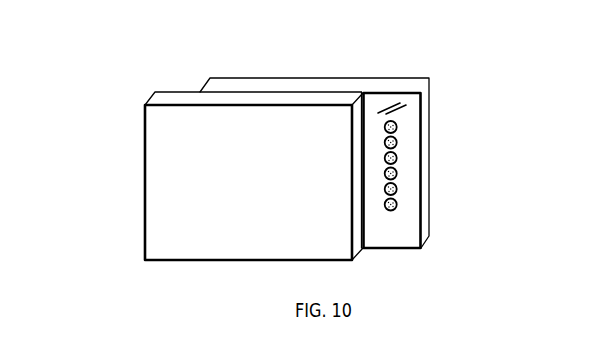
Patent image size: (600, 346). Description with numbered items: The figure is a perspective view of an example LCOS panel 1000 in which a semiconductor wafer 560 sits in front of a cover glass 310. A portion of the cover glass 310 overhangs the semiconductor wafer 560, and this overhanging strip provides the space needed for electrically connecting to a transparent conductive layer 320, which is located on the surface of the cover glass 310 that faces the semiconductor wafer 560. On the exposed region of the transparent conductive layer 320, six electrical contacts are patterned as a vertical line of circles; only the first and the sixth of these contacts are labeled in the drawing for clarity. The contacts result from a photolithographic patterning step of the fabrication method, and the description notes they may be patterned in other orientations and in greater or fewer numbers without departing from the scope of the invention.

The LCOS panel 1000 is at (99, 51).
The cover glass 310 is at (389, 83).
The transparent conductive layer 320 is at (403, 239).
The semiconductor wafer 560 is at (265, 192).